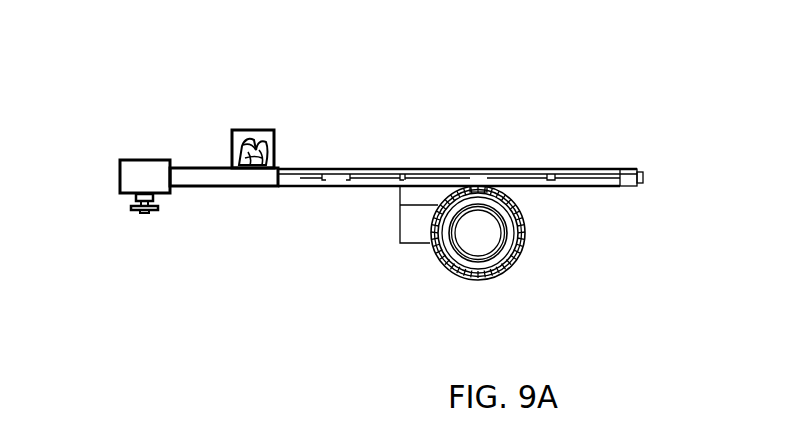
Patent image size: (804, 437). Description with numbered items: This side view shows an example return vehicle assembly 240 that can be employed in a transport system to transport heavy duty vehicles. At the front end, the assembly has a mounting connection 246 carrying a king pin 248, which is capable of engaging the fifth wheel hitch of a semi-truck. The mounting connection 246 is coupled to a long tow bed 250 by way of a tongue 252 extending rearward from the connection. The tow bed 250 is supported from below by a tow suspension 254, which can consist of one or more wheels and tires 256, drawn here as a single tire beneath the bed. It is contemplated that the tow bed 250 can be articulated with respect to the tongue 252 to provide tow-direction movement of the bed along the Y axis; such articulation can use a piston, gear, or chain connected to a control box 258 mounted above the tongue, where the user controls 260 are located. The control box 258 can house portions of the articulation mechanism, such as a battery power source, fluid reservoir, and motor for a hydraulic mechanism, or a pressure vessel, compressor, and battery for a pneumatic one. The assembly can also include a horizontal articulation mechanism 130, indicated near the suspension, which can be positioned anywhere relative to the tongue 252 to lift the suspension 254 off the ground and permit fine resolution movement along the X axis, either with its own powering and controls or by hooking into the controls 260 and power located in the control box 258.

The mobility device assembly 240 is at (128, 84).
The mounting connection 246 is at (141, 158).
The king pin 248 is at (144, 214).
The tow bed 250 is at (590, 170).
The tongue 252 is at (223, 188).
The tow suspension 254 is at (548, 239).
The wheels and tires 256 is at (438, 259).
The control box 258 is at (235, 130).
The user controls 260 is at (282, 152).
The horizontal articulation mechanism 130 is at (419, 214).